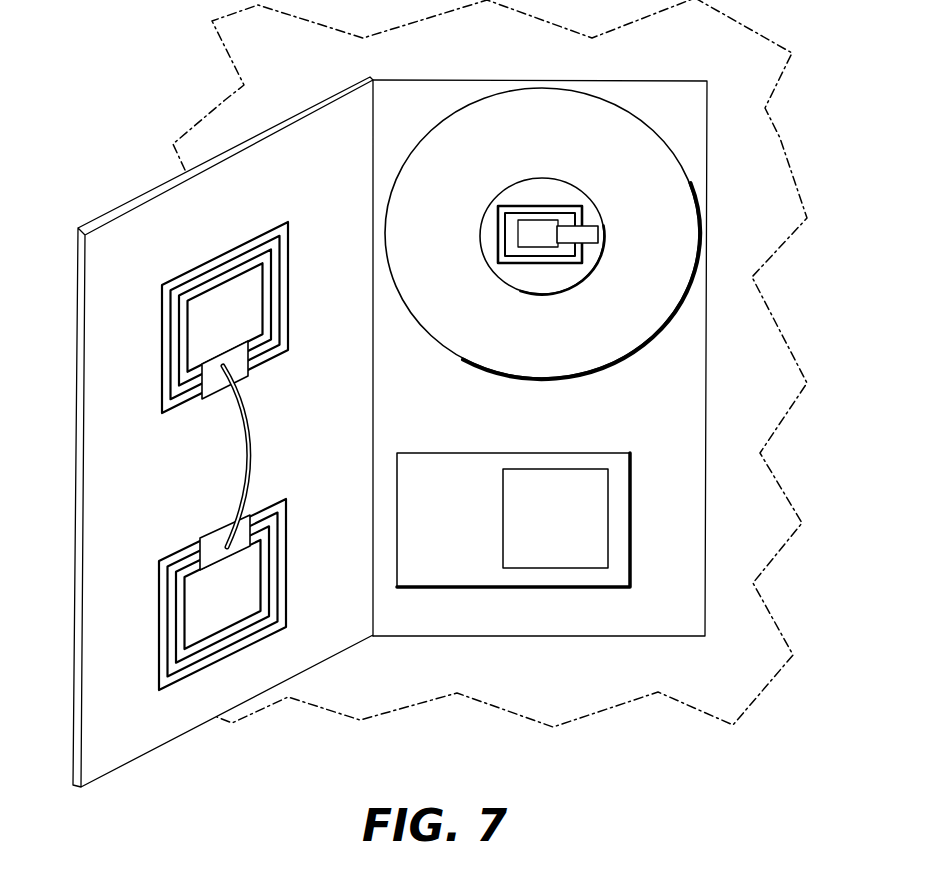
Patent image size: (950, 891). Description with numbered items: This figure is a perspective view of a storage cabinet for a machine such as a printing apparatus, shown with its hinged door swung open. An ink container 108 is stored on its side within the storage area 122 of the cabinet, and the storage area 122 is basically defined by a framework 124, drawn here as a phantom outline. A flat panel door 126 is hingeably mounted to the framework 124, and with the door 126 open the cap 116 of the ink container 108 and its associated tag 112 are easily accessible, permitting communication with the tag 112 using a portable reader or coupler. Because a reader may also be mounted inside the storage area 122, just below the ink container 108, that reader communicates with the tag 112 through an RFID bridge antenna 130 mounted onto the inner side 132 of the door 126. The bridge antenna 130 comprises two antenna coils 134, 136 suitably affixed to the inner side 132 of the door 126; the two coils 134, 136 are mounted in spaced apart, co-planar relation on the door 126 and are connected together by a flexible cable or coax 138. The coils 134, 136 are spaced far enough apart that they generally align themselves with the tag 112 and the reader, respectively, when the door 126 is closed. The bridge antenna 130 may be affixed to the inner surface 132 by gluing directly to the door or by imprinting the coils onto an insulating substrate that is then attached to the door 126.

The ink container 108 is at (557, 103).
The tag 112 is at (528, 230).
The cap 116 is at (565, 191).
The storage area 122 is at (688, 390).
The framework 124 is at (780, 138).
The flat panel door 126 is at (88, 243).
The RFID bridge antenna 130 is at (219, 456).
The inner side 132 is at (349, 395).
The antenna coil 134 is at (162, 343).
The antenna coil 136 is at (159, 637).
The flexible cable or coax 138 is at (253, 465).